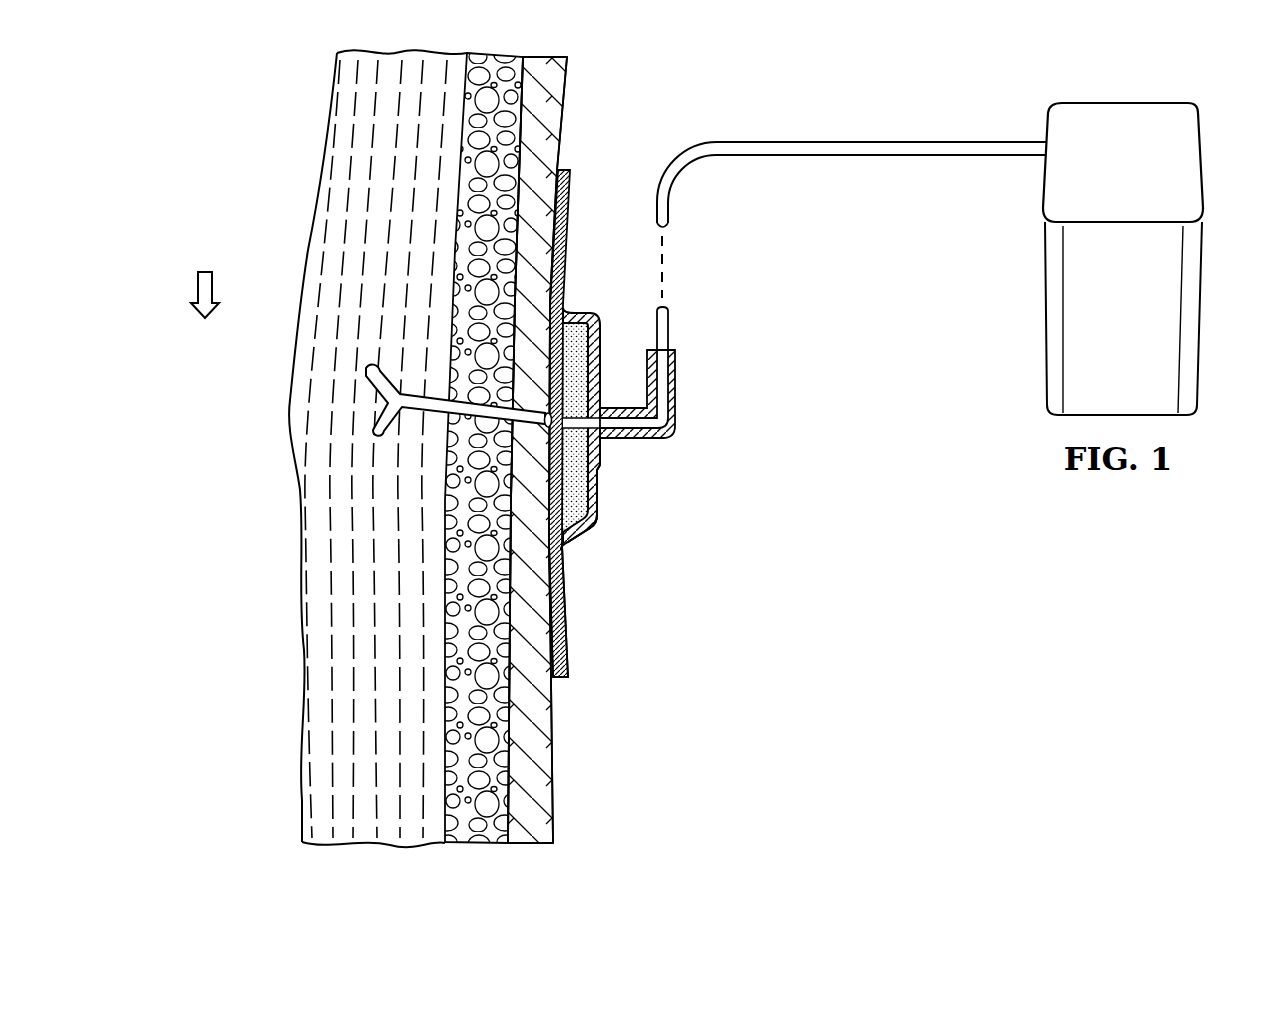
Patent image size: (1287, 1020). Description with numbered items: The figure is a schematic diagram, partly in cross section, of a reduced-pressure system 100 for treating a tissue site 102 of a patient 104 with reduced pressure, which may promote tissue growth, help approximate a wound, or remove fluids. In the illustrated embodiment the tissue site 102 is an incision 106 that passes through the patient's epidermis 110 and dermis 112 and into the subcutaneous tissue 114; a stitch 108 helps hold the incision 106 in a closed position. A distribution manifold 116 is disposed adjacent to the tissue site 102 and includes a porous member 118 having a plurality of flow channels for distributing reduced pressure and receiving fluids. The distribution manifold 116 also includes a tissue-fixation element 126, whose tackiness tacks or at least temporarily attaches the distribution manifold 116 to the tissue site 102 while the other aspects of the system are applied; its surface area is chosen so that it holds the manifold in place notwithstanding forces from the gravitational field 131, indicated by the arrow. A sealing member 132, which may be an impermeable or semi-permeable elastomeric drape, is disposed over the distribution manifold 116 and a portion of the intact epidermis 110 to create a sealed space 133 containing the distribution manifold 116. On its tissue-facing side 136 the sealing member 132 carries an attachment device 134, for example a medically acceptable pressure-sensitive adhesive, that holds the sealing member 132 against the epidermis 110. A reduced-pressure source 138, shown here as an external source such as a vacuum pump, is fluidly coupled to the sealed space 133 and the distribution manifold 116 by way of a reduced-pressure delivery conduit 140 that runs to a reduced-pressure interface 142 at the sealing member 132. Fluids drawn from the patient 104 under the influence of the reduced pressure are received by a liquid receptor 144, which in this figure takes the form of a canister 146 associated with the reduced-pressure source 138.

The reduced-pressure system 100 is at (622, 419).
The tissue site 102 is at (530, 482).
The patient 104 is at (556, 766).
The incision 106 is at (380, 415).
The stitch 108 is at (538, 445).
The epidermis 110 is at (531, 846).
The dermis 112 is at (479, 848).
The subcutaneous tissue 114 is at (362, 846).
The distribution manifold 116 is at (610, 513).
The porous member 118 is at (599, 495).
The tissue-fixation element 126 is at (578, 318).
The gravitational field 131 is at (196, 288).
The sealing member 132 is at (563, 610).
The sealed space 133 is at (588, 527).
The attachment device 134 is at (558, 680).
The tissue-facing side 136 is at (566, 168).
The reduced-pressure source 138 is at (1157, 233).
The reduced-pressure delivery conduit 140 is at (884, 142).
The reduced-pressure interface 142 is at (676, 380).
The liquid receptor 144 is at (1172, 288).
The canister 146 is at (1168, 385).